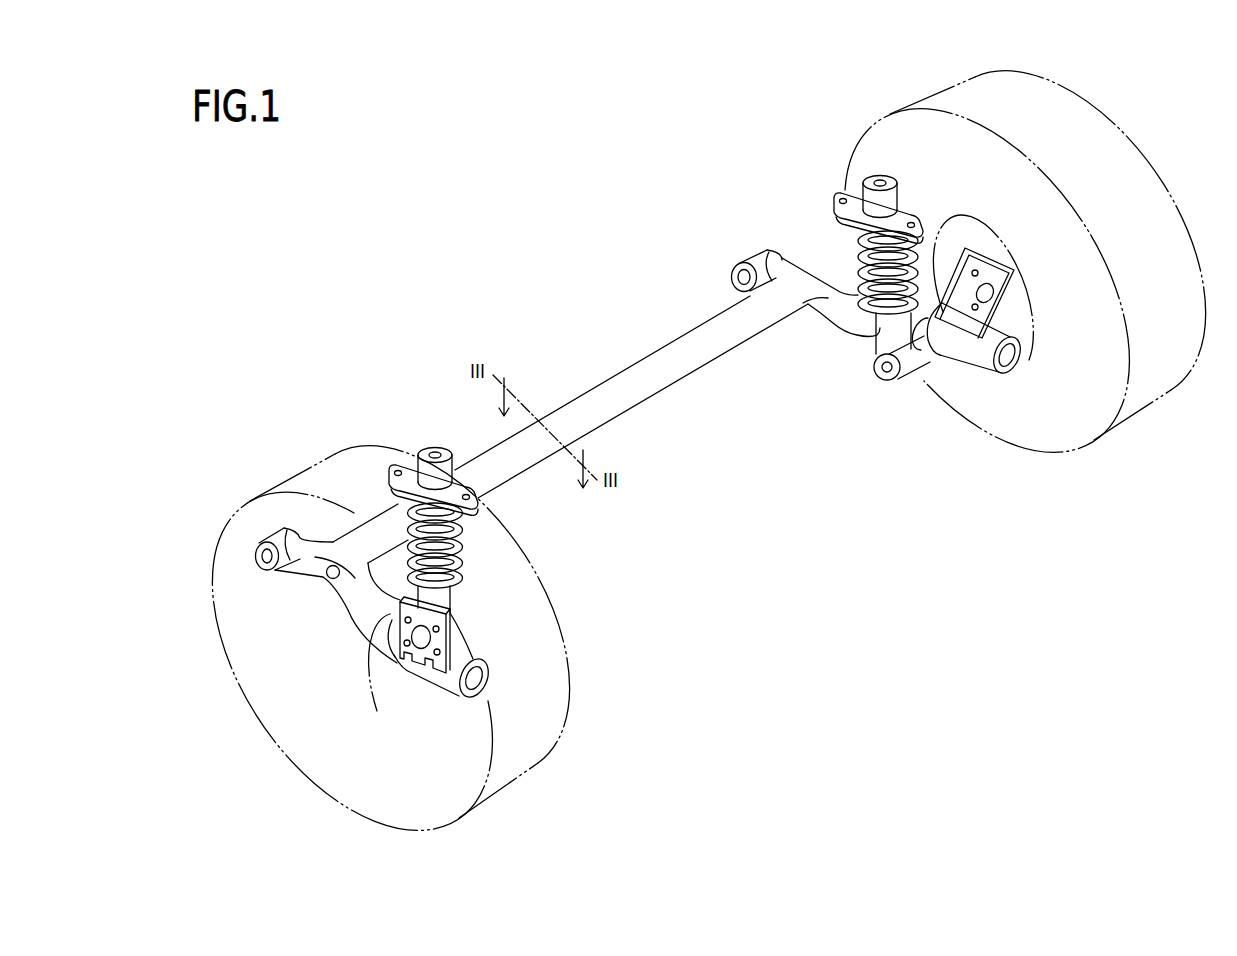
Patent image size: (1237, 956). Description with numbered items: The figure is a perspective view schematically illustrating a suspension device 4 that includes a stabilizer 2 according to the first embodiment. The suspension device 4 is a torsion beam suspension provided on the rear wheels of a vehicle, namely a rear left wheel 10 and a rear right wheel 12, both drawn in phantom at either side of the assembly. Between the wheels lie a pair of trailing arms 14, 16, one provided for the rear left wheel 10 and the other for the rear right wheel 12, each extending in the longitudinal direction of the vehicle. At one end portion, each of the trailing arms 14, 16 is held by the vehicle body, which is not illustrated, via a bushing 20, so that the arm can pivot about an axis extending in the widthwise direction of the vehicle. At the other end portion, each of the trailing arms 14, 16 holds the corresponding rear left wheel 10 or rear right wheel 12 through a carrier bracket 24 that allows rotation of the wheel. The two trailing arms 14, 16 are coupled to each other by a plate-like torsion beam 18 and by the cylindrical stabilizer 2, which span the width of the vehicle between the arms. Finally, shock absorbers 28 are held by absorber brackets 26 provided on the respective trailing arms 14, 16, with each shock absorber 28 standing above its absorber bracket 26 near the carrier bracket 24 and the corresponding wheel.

The stabilizer 2 is at (320, 584).
The suspension device 4 is at (548, 298).
The rear left wheel 10 is at (533, 763).
The rear right wheel 12 is at (1048, 90).
The trailing arm 14 is at (357, 617).
The trailing arm 16 is at (848, 323).
The torsion beam 18 is at (603, 387).
The bushing 20 is at (277, 538).
The carrier bracket 24 is at (423, 658).
The absorber bracket 26 is at (382, 648).
The shock absorber 28 is at (440, 597).